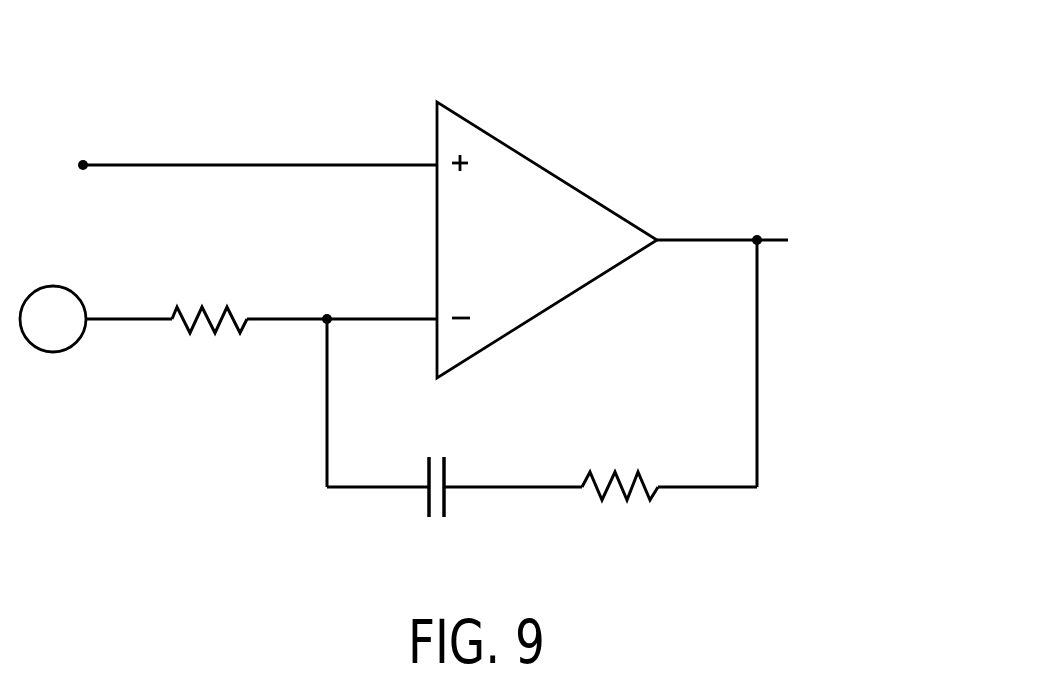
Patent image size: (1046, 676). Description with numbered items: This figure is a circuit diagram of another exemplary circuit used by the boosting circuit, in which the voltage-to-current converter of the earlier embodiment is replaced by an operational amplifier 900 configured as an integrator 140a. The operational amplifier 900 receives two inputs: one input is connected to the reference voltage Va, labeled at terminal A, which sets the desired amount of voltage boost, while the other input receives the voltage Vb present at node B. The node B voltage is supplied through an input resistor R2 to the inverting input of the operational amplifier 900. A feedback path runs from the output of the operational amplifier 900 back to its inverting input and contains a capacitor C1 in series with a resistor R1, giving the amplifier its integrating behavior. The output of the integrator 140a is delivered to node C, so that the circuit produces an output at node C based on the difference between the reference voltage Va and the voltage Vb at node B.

The integrator 140a is at (471, 296).
The operational amplifier 900 is at (547, 310).
The input node A is at (80, 160).
The node B is at (53, 319).
The feedback resistor R1 is at (602, 500).
The input resistor R2 is at (240, 330).
The feedback capacitor C1 is at (428, 500).